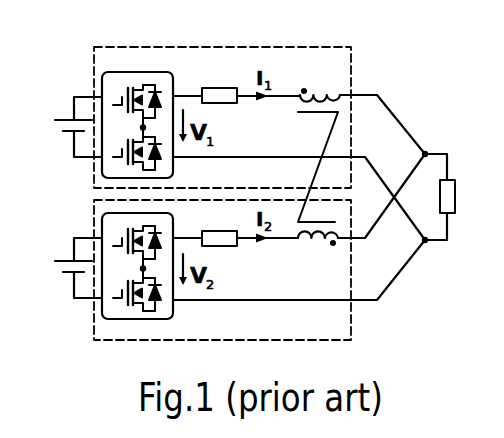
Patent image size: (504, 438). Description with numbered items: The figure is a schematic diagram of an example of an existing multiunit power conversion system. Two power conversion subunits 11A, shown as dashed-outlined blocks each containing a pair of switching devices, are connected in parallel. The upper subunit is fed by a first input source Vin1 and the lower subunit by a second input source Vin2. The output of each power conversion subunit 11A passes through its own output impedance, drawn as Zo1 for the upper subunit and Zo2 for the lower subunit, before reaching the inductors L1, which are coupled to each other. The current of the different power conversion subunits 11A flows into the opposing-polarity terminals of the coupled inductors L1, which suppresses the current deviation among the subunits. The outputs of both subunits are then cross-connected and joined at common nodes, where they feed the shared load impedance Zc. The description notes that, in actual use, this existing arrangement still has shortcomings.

The power conversion subunit 11A is at (125, 47).
The first input voltage source Vin1 is at (58, 127).
The second input voltage source Vin2 is at (58, 268).
The output impedance of first converter Zo1 is at (219, 84).
The output impedance of second converter Zo2 is at (219, 226).
The coupled inductor L1 is at (319, 167).
The common load impedance Zc is at (455, 197).